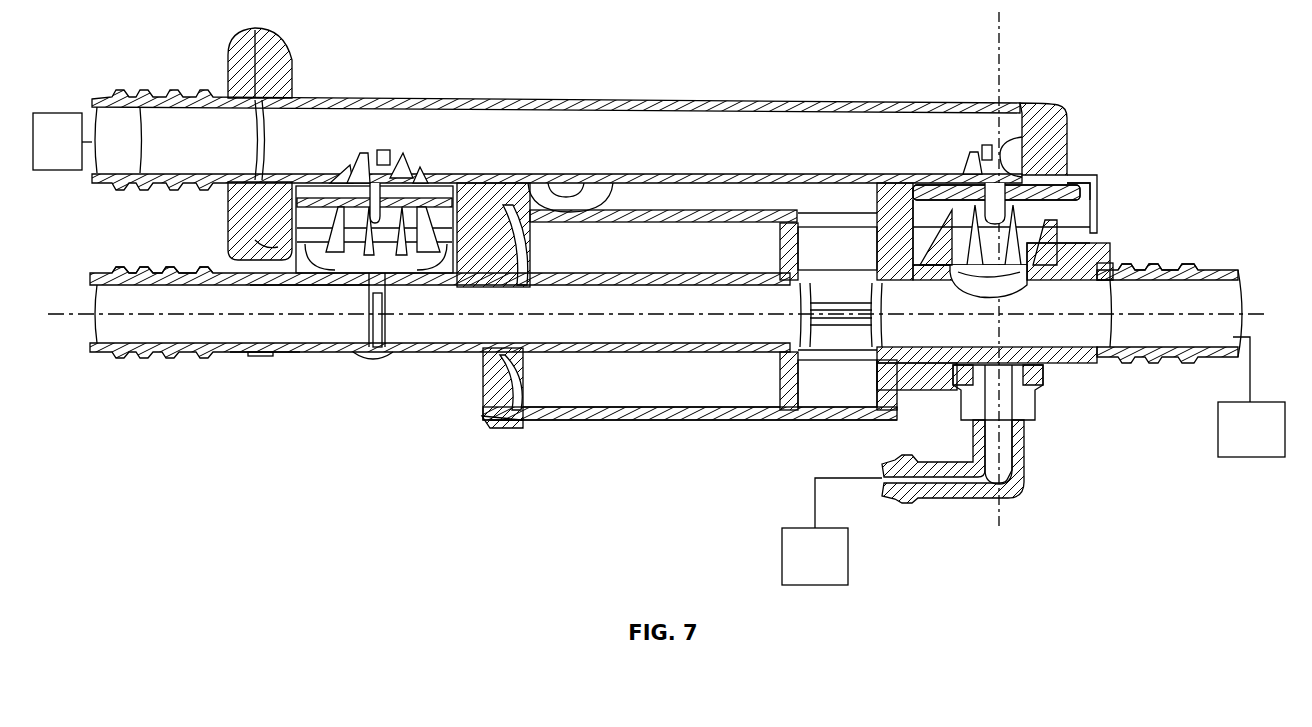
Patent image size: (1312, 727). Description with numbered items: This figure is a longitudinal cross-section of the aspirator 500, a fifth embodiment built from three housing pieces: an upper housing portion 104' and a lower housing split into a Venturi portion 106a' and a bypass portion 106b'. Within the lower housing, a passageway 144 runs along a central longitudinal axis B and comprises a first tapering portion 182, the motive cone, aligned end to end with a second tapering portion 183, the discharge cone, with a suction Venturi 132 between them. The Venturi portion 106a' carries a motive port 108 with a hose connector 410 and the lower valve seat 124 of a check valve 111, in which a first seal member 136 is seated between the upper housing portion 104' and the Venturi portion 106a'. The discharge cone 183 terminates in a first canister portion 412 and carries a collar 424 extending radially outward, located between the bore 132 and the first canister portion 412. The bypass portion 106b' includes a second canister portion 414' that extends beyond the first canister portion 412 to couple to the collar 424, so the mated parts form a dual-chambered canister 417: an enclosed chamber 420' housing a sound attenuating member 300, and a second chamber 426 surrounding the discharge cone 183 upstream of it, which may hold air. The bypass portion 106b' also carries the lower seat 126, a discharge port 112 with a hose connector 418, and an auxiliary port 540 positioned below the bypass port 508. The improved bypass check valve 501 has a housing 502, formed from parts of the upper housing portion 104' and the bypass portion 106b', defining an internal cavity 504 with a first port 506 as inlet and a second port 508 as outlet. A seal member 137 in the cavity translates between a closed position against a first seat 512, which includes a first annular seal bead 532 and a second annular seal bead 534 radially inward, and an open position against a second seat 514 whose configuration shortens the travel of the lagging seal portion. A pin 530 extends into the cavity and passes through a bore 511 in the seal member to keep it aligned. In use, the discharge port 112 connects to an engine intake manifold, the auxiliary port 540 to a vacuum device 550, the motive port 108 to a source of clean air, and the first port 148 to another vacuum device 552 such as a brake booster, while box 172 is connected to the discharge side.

The upper housing portion 104' is at (557, 109).
The first port 148 is at (88, 116).
The device utilizing vacuum 552 is at (63, 158).
The aspirator 500 is at (765, 77).
The first port 506 is at (983, 133).
The bore 511 is at (1000, 200).
The second annular seal bead 534 is at (1025, 185).
The seal member 137 is at (1062, 180).
The housing 502 is at (1095, 187).
The bypass check valve 501 is at (1102, 227).
The hose connector 418 is at (1197, 267).
The lower seat 126 is at (1100, 263).
The first seal member 136 is at (333, 200).
The first seat 512 is at (908, 186).
The first annular seal bead 532 is at (996, 192).
The pin 530 is at (963, 187).
The internal cavity 504 is at (910, 229).
The hose connector 410 is at (142, 265).
The check valve 111 is at (262, 205).
The lower valve seat 124 is at (258, 243).
The motive port 108 is at (97, 300).
The first canister portion 412 is at (790, 257).
The second seat 514 is at (880, 251).
The bypass port 508 is at (1017, 270).
The central longitudinal axis B is at (70, 317).
The first tapering portion 182 is at (177, 337).
The Venturi portion 106a' is at (251, 382).
The passageway 144 is at (317, 327).
The suction Venturi 132 is at (378, 290).
The second tapering portion 183 is at (473, 327).
The collar 424 is at (507, 405).
The second chamber 426 is at (560, 393).
The second canister portion 414' is at (690, 417).
The canister 417 is at (693, 425).
The enclosed chamber 420' is at (810, 407).
The sound attenuating member 300 is at (843, 387).
The bypass portion 106b' is at (989, 385).
The discharge port 112 is at (1240, 327).
The destination component 172 is at (1256, 458).
The auxiliary port 540 is at (943, 492).
The device utilizing vacuum 550 is at (813, 587).